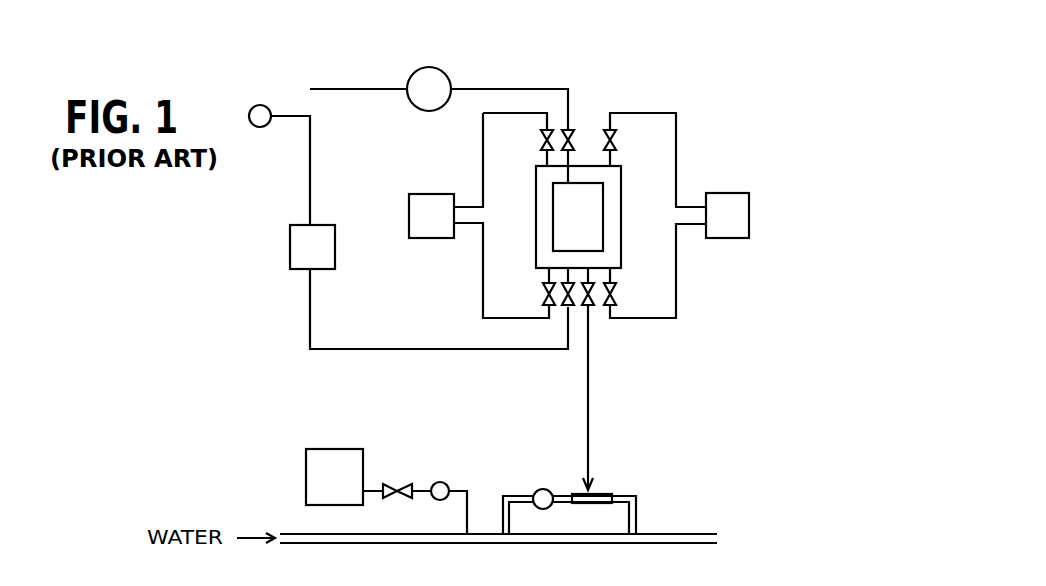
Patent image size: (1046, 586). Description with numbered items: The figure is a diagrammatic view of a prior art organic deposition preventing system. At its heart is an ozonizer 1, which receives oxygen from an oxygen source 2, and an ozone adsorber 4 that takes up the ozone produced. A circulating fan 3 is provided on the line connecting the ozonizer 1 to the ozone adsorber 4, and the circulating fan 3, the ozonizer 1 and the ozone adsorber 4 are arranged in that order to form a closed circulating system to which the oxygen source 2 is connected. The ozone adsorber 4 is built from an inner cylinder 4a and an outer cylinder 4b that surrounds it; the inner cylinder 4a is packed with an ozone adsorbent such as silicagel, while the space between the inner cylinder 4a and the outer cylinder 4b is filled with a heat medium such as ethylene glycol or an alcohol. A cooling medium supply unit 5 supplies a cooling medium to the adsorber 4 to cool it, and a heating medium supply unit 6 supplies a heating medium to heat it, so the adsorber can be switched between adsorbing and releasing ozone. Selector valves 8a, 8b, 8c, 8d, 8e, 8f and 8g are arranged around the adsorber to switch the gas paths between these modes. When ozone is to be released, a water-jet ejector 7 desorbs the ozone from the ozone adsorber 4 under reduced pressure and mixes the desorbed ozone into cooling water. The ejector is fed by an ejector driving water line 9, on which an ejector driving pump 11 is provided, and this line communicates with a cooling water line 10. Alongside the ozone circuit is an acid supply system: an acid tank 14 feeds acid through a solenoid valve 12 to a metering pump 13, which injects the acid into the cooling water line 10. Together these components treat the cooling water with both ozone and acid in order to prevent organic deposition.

The ozonizer 1 is at (290, 245).
The oxygen source 2 is at (262, 105).
The circulating fan 3 is at (432, 68).
The ozone adsorber 4 is at (547, 242).
The inner cylinder 4a is at (552, 232).
The outer cylinder 4b is at (537, 258).
The cooling medium supply unit 5 is at (409, 206).
The heating medium supply unit 6 is at (749, 222).
The water-jet ejector 7 is at (605, 494).
The selector valve 8a is at (542, 141).
The selector valve 8b is at (545, 308).
The selector valve 8c is at (569, 130).
The selector valve 8d is at (567, 308).
The selector valve 8e is at (616, 142).
The selector valve 8f is at (613, 305).
The selector valve 8g is at (589, 307).
The ejector driving water line 9 is at (520, 496).
The cooling water line 10 is at (690, 534).
The ejector driving pump 11 is at (548, 489).
The solenoid valve 12 is at (407, 485).
The metering pump 13 is at (440, 482).
The acid tank 14 is at (330, 449).